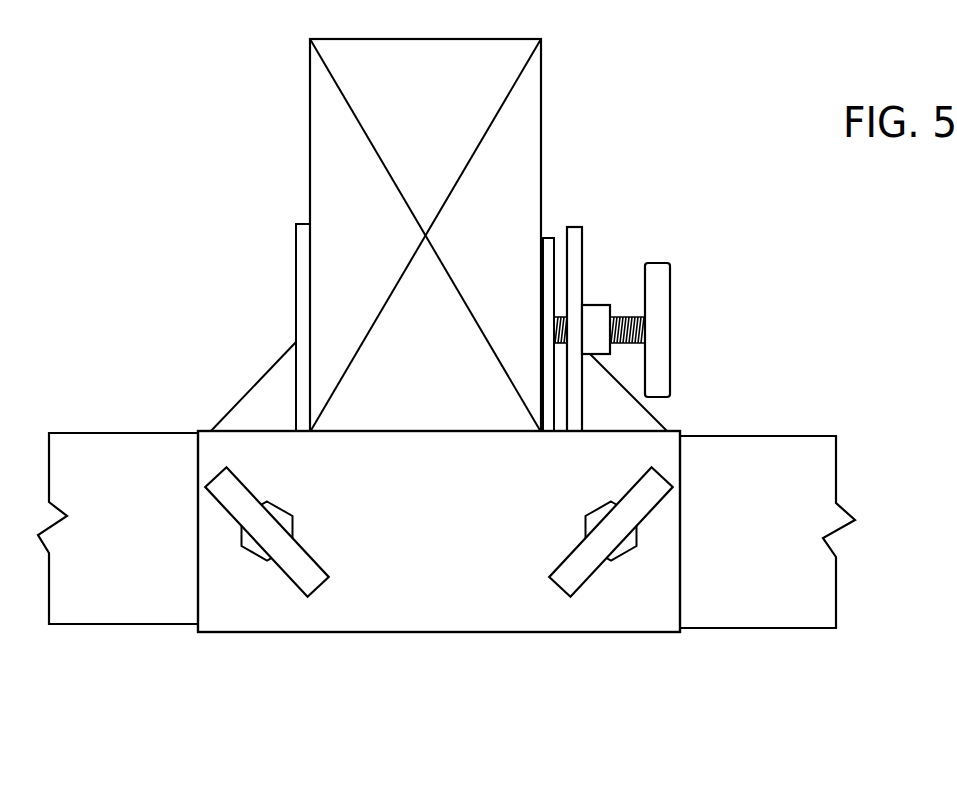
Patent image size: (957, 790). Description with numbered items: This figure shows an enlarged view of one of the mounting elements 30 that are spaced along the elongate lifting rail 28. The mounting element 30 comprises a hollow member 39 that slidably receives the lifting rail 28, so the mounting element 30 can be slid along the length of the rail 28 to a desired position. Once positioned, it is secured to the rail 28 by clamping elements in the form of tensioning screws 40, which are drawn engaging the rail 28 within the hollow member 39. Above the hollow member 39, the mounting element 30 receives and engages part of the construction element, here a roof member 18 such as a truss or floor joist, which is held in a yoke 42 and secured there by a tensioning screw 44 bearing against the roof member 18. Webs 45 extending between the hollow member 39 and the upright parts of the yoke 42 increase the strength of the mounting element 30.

The roof member 18 is at (312, 127).
The elongate lifting rail 28 is at (153, 624).
The mounting element 30 is at (722, 666).
The hollow member 39 is at (456, 529).
The tensioning screw 40 is at (317, 587).
The yoke 42 is at (583, 237).
The tensioning screw 44 is at (670, 328).
The web 45 is at (268, 402).